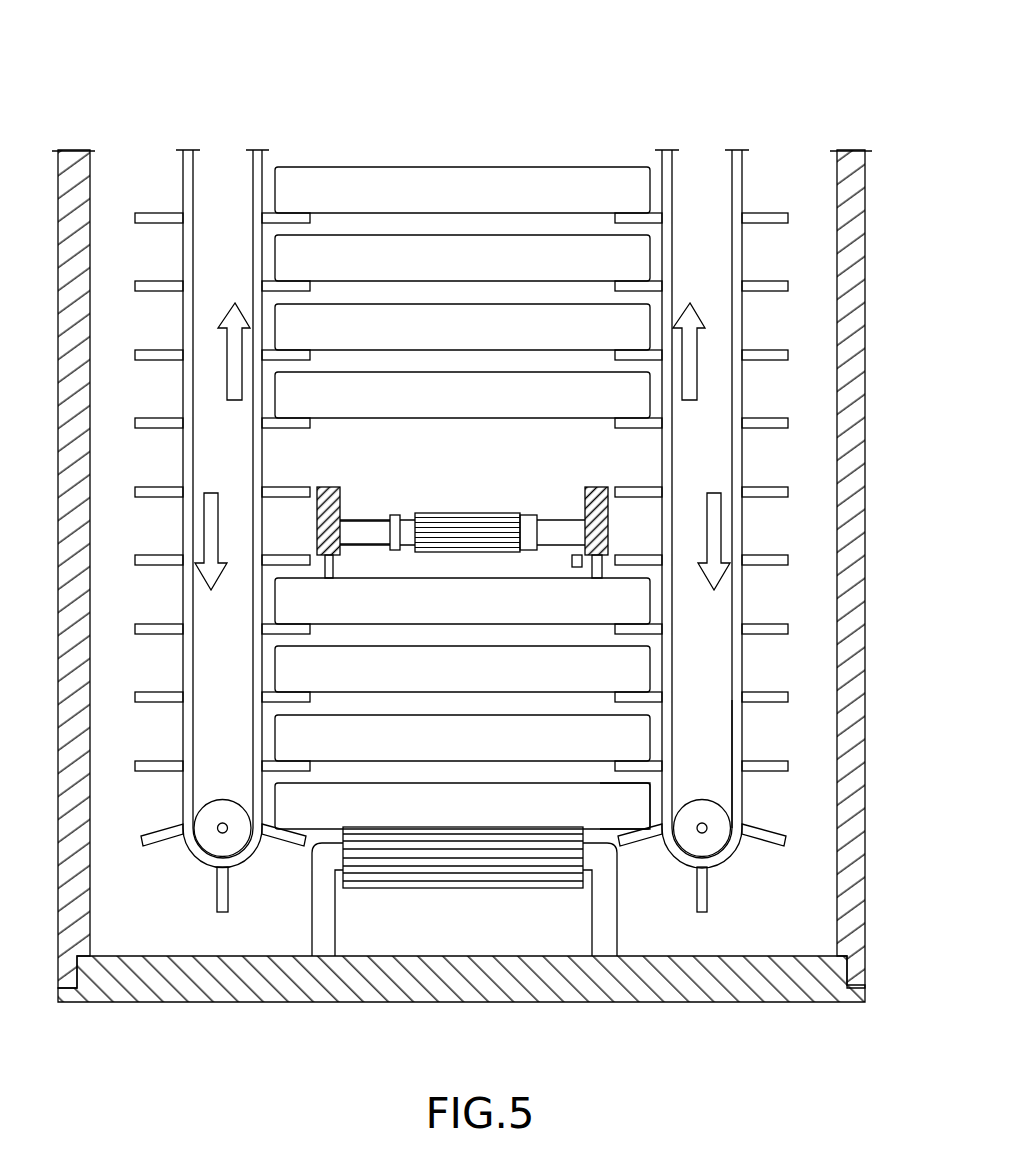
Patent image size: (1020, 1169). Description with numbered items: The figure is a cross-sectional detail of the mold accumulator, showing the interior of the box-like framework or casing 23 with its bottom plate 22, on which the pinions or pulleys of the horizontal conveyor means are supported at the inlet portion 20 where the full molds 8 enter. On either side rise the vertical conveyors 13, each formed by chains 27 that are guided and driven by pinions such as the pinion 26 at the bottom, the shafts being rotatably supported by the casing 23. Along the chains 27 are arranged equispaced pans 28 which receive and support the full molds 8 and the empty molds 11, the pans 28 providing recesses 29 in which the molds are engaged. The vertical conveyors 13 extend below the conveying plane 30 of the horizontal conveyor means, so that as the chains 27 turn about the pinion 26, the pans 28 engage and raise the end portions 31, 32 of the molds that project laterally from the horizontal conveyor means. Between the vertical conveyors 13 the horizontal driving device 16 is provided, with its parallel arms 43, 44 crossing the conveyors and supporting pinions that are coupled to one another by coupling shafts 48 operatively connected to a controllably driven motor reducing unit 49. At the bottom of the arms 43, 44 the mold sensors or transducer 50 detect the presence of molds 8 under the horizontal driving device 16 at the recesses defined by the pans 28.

The full molds 8 is at (463, 818).
The empty molds 11 is at (463, 197).
The vertical conveyors 13 is at (223, 150).
The horizontal driving device 16 is at (308, 520).
The inlet portion of the horizontal conveyor means 20 is at (530, 857).
The bottom plate 22 is at (732, 982).
The box-like framework or casing 23 is at (877, 553).
The pinion 26 is at (710, 815).
The chains 27 is at (735, 793).
The pans 28 is at (157, 838).
The recesses 29 is at (273, 257).
The conveying plane 30 is at (380, 822).
The end portion of the mold 31 is at (307, 802).
The end portion of the mold 32 is at (615, 813).
The parallel arm 43 is at (598, 520).
The parallel arm 44 is at (330, 515).
The coupling shafts 48 is at (360, 535).
The motor reducing unit 49 is at (465, 528).
The mold sensors or transducer 50 is at (575, 562).